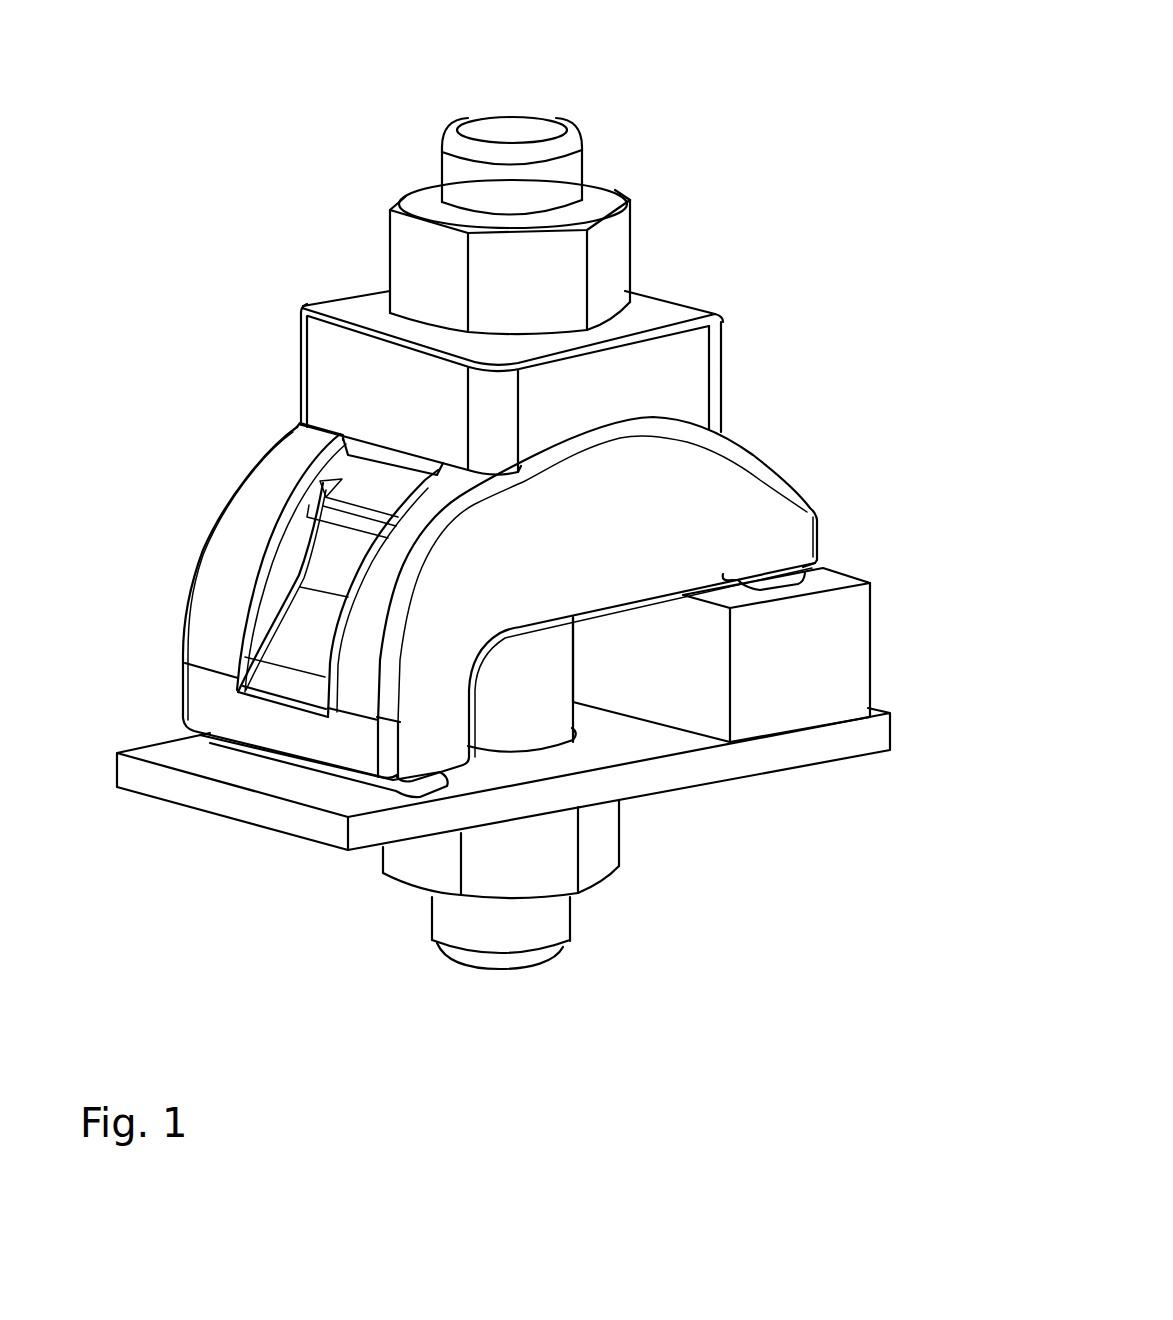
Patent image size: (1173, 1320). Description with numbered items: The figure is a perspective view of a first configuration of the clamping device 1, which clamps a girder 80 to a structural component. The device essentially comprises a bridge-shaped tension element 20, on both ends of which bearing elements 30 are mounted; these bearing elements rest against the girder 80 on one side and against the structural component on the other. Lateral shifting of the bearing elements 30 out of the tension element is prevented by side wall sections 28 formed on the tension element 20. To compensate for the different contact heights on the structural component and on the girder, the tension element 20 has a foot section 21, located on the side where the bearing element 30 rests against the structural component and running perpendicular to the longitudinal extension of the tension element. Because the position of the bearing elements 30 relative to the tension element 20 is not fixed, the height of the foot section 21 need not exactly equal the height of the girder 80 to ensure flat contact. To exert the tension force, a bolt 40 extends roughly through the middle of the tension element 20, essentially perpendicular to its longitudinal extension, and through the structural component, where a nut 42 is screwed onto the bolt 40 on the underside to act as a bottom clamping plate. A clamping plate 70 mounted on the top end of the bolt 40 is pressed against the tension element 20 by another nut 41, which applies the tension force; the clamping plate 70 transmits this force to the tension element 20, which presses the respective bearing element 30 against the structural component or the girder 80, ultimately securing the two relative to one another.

The clamping device 1 is at (737, 145).
The tension element 20 is at (700, 488).
The foot section 21 is at (470, 713).
The side wall sections 28 is at (776, 561).
The bearing elements 30 is at (785, 575).
The bolt 40 is at (453, 170).
The nut 41 is at (420, 262).
The nut 42 is at (605, 844).
The clamping plate 70 is at (338, 380).
The girder 80 is at (853, 668).